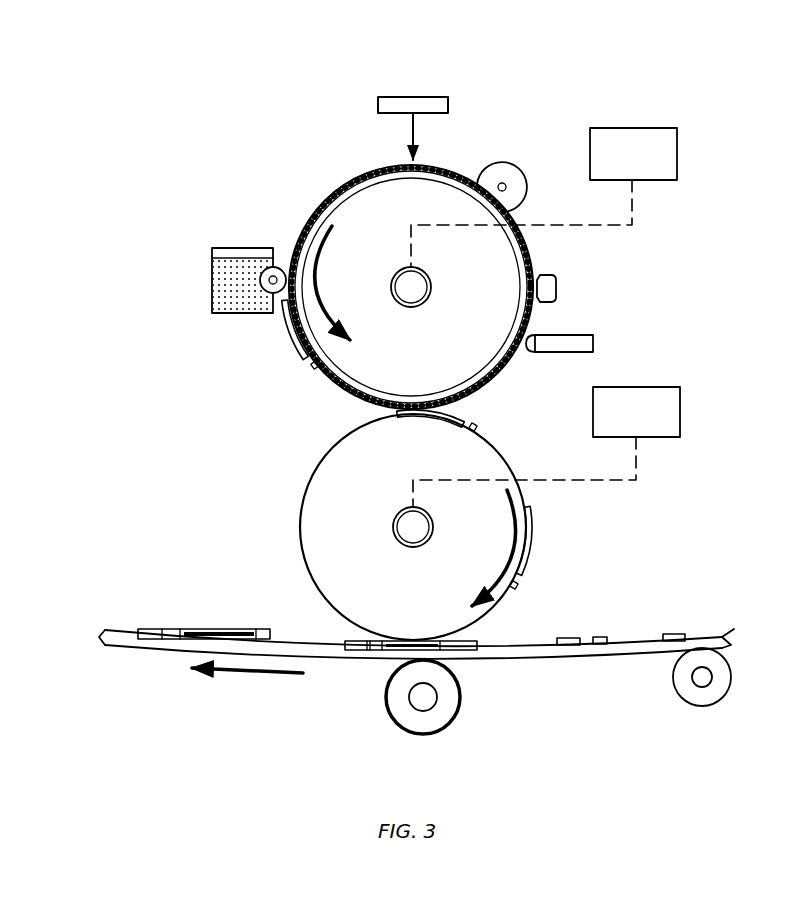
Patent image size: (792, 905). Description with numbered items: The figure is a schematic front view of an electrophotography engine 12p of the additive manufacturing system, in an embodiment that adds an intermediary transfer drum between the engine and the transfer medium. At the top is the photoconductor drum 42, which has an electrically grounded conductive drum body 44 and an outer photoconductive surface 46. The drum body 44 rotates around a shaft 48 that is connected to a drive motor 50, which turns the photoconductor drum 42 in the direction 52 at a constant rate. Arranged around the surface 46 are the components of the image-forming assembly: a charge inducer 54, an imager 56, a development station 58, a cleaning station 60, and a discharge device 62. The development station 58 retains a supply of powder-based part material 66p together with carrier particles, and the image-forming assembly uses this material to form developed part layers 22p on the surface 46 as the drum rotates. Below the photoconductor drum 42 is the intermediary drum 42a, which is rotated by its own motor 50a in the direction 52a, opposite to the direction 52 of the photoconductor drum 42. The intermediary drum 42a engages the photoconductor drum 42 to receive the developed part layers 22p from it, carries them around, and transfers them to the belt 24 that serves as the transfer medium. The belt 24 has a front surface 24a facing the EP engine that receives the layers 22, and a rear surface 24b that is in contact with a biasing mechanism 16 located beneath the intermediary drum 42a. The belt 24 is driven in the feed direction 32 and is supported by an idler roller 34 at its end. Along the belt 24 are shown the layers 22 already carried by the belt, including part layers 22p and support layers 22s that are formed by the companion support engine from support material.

The EP engine 12p is at (168, 88).
The biasing mechanism 16 is at (440, 707).
The layers 22 is at (191, 619).
The part layers 22p is at (284, 342).
The support layers 22s is at (351, 659).
The transfer medium 24 is at (150, 643).
The front surface 24a is at (718, 636).
The rear surface 24b is at (592, 661).
The feed direction 32 is at (243, 674).
The idler roller 34 is at (705, 698).
The photoconductor drum 42 is at (302, 199).
The intermediary drum 42a is at (296, 474).
The conductive drum body 44 is at (427, 364).
The photoconductive surface 46 is at (357, 177).
The shaft 48 is at (421, 286).
The drive motor 50 is at (658, 128).
The motor 50a is at (665, 387).
The direction of rotation 52 is at (320, 257).
The direction of rotation 52a is at (500, 507).
The charge inducer 54 is at (497, 168).
The imager 56 is at (432, 97).
The development station 58 is at (208, 241).
The cleaning station 60 is at (577, 335).
The discharge device 62 is at (556, 277).
The part material 66p is at (230, 279).